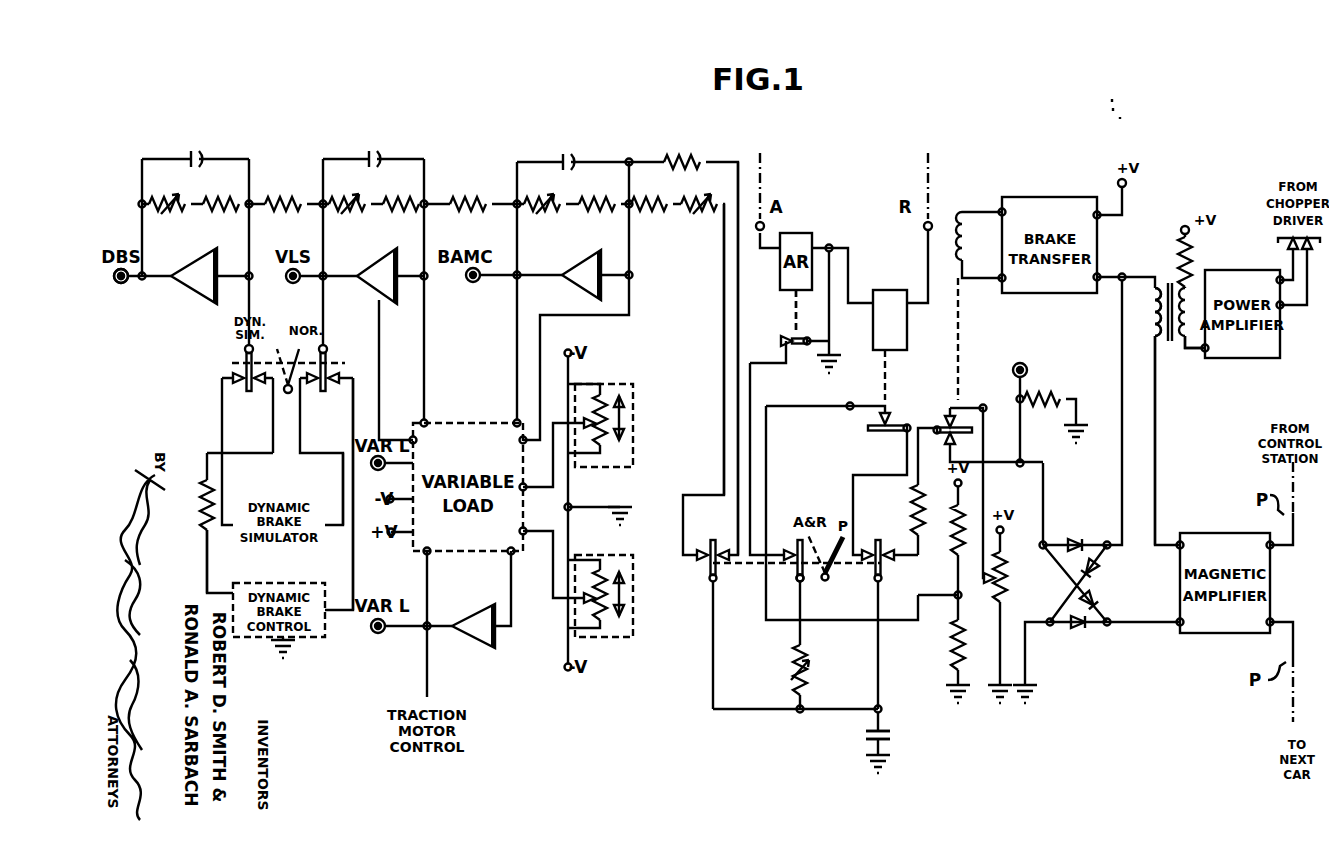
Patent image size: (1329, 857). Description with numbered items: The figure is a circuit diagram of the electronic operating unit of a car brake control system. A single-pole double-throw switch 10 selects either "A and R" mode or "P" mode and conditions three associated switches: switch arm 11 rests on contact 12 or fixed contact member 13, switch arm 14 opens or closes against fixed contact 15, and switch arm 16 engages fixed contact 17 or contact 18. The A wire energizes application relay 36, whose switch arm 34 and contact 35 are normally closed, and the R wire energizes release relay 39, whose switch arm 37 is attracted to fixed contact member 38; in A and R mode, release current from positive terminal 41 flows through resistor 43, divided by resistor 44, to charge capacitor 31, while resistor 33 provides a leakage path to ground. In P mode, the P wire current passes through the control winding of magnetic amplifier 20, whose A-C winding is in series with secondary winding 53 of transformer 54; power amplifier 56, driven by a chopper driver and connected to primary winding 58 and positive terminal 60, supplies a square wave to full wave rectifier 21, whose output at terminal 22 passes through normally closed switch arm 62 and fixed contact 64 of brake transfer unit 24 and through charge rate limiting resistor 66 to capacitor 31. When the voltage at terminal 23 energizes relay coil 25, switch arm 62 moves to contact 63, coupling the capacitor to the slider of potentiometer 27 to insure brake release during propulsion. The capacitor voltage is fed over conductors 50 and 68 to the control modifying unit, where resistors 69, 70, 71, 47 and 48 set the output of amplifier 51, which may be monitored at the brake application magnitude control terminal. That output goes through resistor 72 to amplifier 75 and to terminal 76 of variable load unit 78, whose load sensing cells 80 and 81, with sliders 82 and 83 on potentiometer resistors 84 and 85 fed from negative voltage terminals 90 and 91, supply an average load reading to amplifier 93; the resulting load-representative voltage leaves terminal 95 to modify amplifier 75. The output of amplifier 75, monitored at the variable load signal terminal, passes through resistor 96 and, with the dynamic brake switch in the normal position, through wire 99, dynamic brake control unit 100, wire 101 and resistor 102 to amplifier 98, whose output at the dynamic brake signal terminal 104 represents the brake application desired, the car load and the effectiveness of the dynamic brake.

The switch 10 is at (832, 582).
The switch arm 11 is at (876, 542).
The contact 12 is at (886, 554).
The fixed contact member 13 is at (874, 574).
The switch arm 14 is at (796, 578).
The fixed contact 15 is at (792, 550).
The switch arm 16 is at (720, 580).
The fixed contact 17 is at (718, 540).
The contact 18 is at (706, 576).
The magnetic amplifier 20 is at (1239, 533).
The full wave rectifier 21 is at (1095, 596).
The terminal 22 is at (1048, 546).
The terminal 23 is at (1114, 276).
The brake transfer unit 24 is at (1024, 198).
The relay coil 25 is at (958, 216).
The potentiometer 27 is at (1004, 590).
The capacitor 31 is at (893, 737).
The resistor 33 is at (796, 660).
The switch arm 34 is at (794, 336).
The contact 35 is at (782, 345).
The application relay 36 is at (824, 250).
The switch arm 37 is at (866, 432).
The fixed contact member 38 is at (890, 406).
The release relay 39 is at (894, 292).
The terminal 41 is at (955, 486).
The resistor 43 is at (954, 532).
The resistor 44 is at (954, 644).
The resistor 47 is at (694, 200).
The resistor 48 is at (650, 212).
The conductor 50 is at (718, 363).
The amplifier 51 is at (580, 260).
The secondary winding 53 is at (1152, 320).
The transformer 54 is at (1154, 350).
The power amplifier 56 is at (1237, 271).
The primary winding 58 is at (1202, 352).
The terminal 60 is at (1178, 230).
The switch arm 62 is at (938, 423).
The contact 63 is at (950, 409).
The fixed contact 64 is at (950, 442).
The charge rate limiting resistor 66 is at (912, 504).
The conductor 68 is at (738, 318).
The resistor 69 is at (699, 161).
The resistor 70 is at (528, 204).
The resistor 71 is at (608, 200).
The resistor 72 is at (464, 204).
The amplifier 75 is at (380, 260).
The terminal 76 is at (514, 422).
The variable load unit 78 is at (468, 422).
The load sensing cell 80 is at (633, 455).
The load sensing cell 81 is at (633, 628).
The slider 82 is at (568, 422).
The slider 83 is at (565, 601).
The potentiometer resistor 84 is at (622, 392).
The potentiometer resistor 85 is at (616, 578).
The voltage terminal 90 is at (562, 354).
The voltage terminal 91 is at (562, 670).
The amplifier 93 is at (478, 644).
The terminal 95 is at (421, 422).
The resistor 96 is at (289, 204).
The amplifier 98 is at (202, 258).
The wire 99 is at (342, 556).
The dynamic brake control unit 100 is at (310, 638).
The wire 101 is at (210, 568).
The resistor 102 is at (198, 474).
The DBS terminal 104 is at (125, 284).